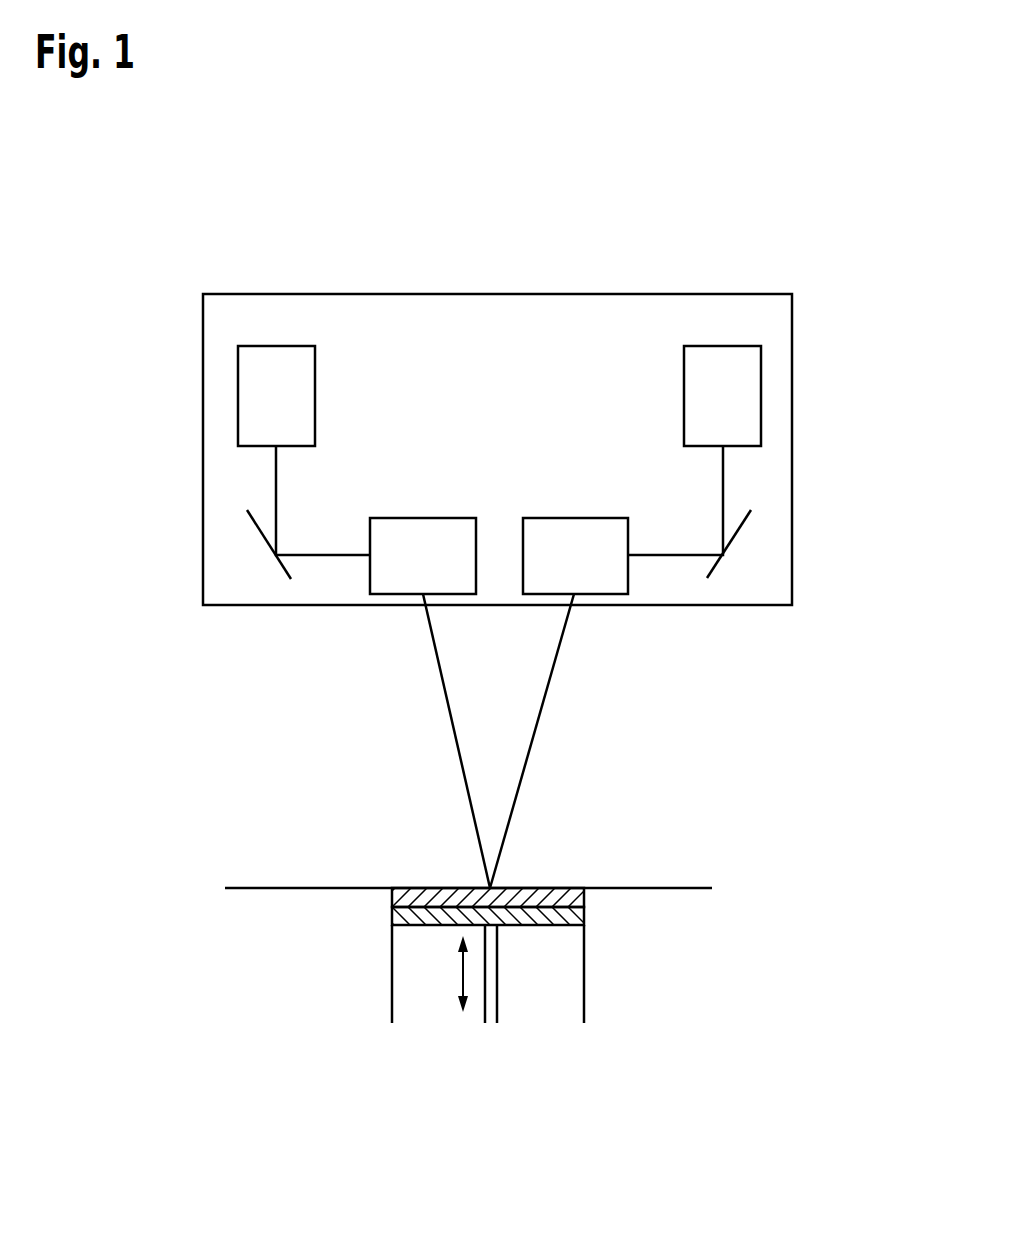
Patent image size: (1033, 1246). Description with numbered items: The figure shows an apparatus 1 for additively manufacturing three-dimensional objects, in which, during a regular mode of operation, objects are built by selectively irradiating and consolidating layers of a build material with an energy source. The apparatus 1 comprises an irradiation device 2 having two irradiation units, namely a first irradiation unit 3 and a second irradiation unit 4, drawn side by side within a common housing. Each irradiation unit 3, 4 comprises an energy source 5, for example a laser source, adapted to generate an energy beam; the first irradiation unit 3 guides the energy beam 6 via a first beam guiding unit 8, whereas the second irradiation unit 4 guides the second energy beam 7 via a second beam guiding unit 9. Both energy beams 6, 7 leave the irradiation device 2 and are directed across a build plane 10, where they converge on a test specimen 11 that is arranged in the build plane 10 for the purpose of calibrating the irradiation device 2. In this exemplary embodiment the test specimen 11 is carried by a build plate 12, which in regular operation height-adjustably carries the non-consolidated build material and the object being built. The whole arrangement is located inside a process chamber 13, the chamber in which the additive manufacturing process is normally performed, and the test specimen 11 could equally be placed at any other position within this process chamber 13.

The apparatus 1 is at (788, 215).
The irradiation device 2 is at (712, 630).
The first irradiation unit 3 is at (387, 398).
The second irradiation unit 4 is at (607, 398).
The energy source 5 is at (276, 346).
The energy beam 6 is at (276, 488).
The second energy beam 7 is at (723, 490).
The first beam guiding unit 8 is at (423, 518).
The second beam guiding unit 9 is at (576, 518).
The build plane 10 is at (575, 873).
The test specimen 11 is at (420, 887).
The build plate 12 is at (425, 927).
The process chamber 13 is at (320, 758).